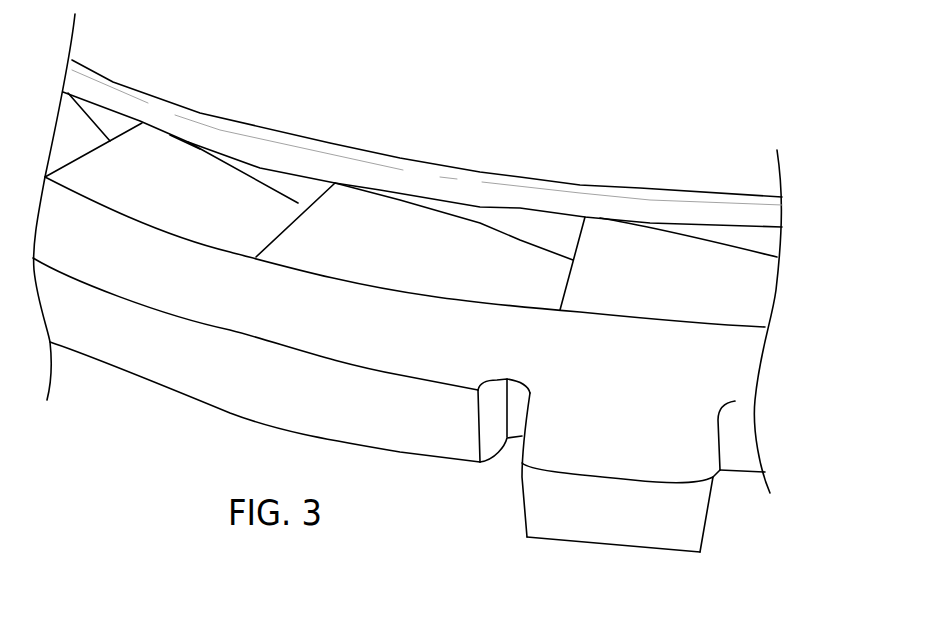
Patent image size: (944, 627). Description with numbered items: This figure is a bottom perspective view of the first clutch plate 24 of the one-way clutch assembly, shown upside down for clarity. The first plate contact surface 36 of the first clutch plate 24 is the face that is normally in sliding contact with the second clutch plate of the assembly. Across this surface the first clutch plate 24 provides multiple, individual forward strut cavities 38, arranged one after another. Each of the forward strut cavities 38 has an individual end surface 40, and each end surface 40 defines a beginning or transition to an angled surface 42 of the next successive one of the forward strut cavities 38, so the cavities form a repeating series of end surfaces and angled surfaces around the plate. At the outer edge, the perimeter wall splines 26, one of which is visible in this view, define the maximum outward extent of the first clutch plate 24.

The first clutch plate 24 is at (505, 110).
The perimeter wall splines 26 is at (552, 450).
The first plate contact surface 36 is at (418, 165).
The forward strut cavities 38 is at (80, 123).
The end surfaces 40 is at (302, 218).
The angled surface 42 is at (180, 162).